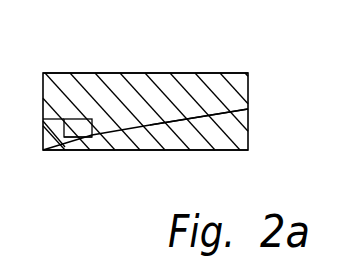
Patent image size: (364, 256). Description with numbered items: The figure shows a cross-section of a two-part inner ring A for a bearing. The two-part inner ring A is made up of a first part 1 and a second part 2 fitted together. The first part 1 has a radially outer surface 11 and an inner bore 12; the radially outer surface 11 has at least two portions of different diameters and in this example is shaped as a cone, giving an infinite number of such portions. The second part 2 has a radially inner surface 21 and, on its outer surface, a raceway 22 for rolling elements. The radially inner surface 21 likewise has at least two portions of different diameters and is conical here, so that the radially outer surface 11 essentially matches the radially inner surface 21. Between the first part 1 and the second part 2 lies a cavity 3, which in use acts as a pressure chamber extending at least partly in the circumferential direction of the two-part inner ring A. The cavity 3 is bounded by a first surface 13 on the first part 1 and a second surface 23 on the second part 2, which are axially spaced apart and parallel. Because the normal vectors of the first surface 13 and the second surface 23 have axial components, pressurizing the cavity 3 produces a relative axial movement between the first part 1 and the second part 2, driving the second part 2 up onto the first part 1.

The two-part inner ring A is at (60, 61).
The first part 1 is at (249, 130).
The second part 2 is at (249, 84).
The cavity 3 is at (85, 133).
The radially outer surface 11 is at (190, 121).
The inner bore 12 is at (229, 150).
The first surface 13 is at (46, 150).
The radially inner surface 21 is at (211, 115).
The raceway 22 is at (117, 79).
The second surface 23 is at (100, 134).